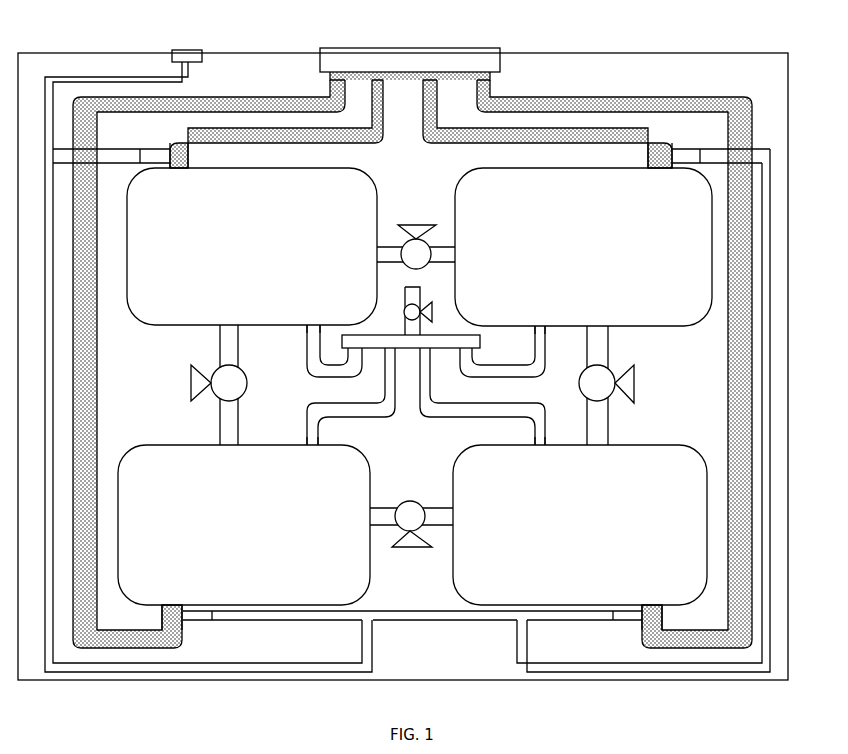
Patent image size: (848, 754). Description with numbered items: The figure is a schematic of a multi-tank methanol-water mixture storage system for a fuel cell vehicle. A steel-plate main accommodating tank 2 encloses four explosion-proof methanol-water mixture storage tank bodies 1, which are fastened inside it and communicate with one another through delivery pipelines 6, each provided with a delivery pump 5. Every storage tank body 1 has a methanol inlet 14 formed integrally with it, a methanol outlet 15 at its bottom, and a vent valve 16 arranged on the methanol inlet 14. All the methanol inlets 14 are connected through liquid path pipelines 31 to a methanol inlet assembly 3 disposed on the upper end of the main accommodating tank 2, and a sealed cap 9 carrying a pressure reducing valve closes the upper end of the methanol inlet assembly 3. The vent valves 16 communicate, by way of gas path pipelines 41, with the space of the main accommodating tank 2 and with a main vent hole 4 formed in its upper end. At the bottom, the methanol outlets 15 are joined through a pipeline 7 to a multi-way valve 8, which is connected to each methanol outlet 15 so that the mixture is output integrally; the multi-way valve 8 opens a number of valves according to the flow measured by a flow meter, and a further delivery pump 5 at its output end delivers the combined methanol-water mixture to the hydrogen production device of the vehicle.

The explosion-proof methanol-water mixture storage tank body 1 is at (695, 213).
The main accommodating tank 2 is at (790, 76).
The methanol inlet assembly 3 is at (418, 78).
The main vent hole 4 is at (192, 48).
The delivery pump 5 is at (415, 225).
The delivery pipeline 6 is at (390, 250).
The pipeline 7 is at (495, 373).
The multi-way valve 8 is at (443, 340).
The sealed cap 9 is at (383, 48).
The methanol inlet 14 is at (188, 162).
The methanol outlet 15 is at (307, 335).
The vent valve 16 is at (148, 149).
The liquid path pipeline 31 is at (268, 97).
The gas path pipeline 41 is at (45, 80).